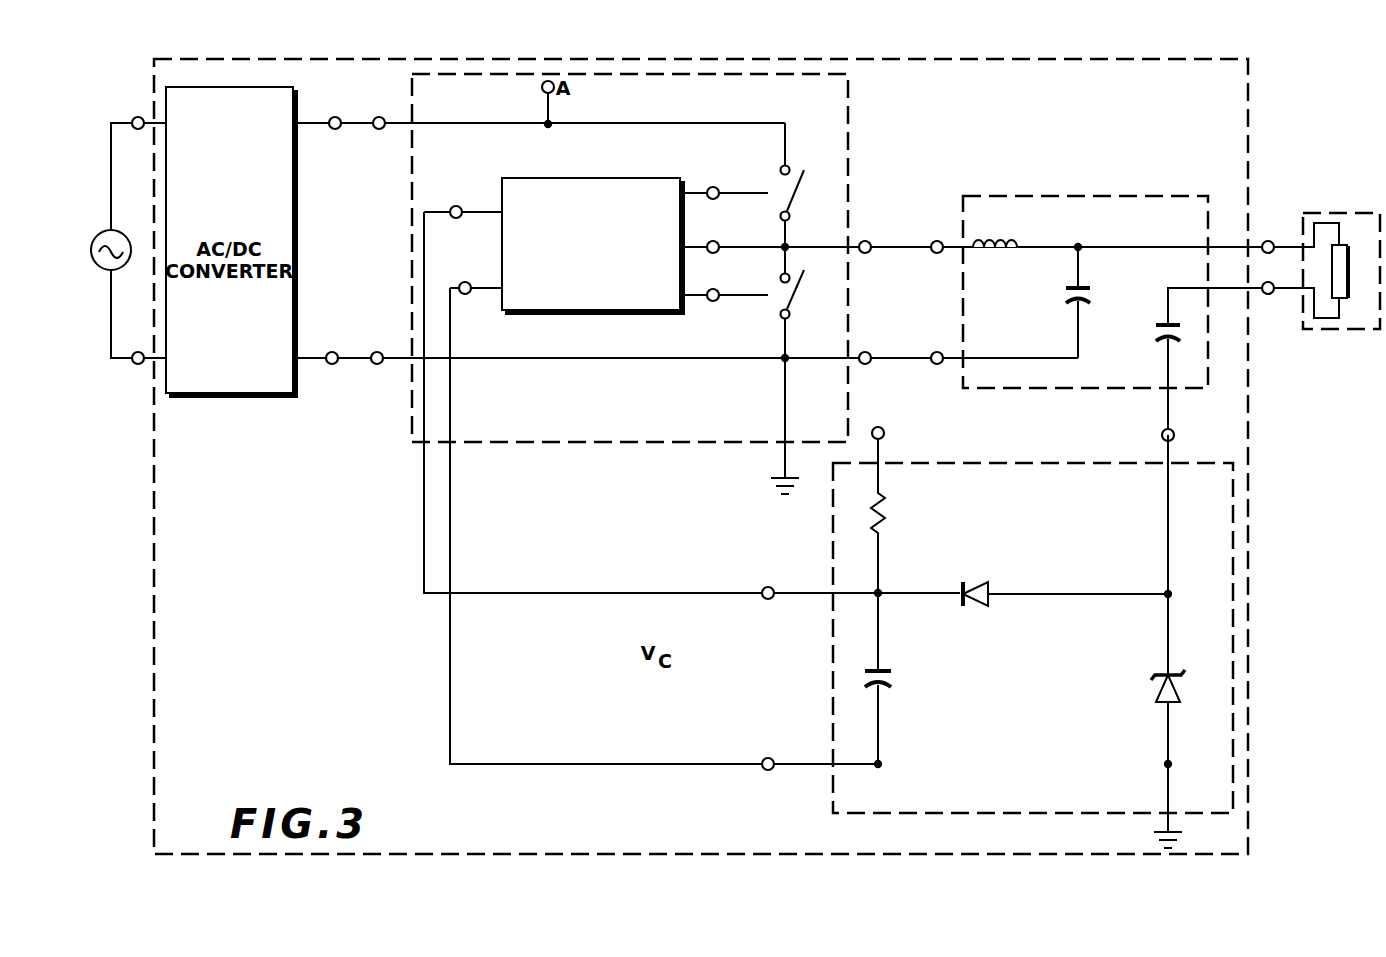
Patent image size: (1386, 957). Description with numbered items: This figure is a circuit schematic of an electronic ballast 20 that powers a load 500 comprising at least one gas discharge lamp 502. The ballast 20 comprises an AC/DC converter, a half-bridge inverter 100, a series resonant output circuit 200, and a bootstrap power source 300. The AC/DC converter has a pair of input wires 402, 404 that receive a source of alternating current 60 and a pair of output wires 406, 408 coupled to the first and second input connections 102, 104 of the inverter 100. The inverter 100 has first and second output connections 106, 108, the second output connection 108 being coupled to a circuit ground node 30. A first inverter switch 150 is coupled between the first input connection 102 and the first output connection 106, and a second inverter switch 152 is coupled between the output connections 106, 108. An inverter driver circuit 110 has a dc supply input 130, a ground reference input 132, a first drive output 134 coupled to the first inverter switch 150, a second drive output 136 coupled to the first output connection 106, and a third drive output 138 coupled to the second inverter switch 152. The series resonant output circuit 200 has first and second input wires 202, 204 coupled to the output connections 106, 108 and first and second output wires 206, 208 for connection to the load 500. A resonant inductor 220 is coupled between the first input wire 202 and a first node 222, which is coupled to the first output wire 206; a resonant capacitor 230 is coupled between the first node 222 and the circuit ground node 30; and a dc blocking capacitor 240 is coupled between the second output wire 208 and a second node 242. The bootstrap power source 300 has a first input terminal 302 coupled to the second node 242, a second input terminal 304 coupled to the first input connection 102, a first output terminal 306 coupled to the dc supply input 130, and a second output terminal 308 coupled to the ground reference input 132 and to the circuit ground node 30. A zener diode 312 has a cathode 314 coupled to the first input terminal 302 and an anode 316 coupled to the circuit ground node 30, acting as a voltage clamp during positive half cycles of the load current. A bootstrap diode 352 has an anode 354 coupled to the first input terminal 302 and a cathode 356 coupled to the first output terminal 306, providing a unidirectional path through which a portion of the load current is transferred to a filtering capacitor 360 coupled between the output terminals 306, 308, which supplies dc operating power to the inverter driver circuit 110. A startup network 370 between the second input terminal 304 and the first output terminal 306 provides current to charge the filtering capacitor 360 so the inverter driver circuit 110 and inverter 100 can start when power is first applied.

The electronic ballast 20 is at (153, 476).
The circuit ground node 30 is at (783, 470).
The source of alternating current 60 is at (102, 236).
The half-bridge inverter 100 is at (849, 95).
The first input connection 102 is at (377, 130).
The second input connection 104 is at (377, 365).
The first output connection 106 is at (868, 241).
The second output connection 108 is at (868, 352).
The inverter driver circuit 110 is at (573, 178).
The dc supply input 130 is at (452, 205).
The ground reference input 132 is at (462, 281).
The first drive output 134 is at (710, 186).
The second drive output 136 is at (713, 241).
The third drive output 138 is at (712, 289).
The first inverter switch 150 is at (804, 176).
The second inverter switch 152 is at (804, 276).
The series resonant output circuit 200 is at (1098, 197).
The first input wire 202 is at (937, 254).
The second input wire 204 is at (937, 365).
The first output wire 206 is at (1267, 241).
The second output wire 208 is at (1266, 295).
The resonant inductor 220 is at (1010, 238).
The first node 222 is at (1082, 246).
The resonant capacitor 230 is at (1068, 290).
The dc blocking capacitor 240 is at (1164, 318).
The second node 242 is at (1170, 412).
The bootstrap power source 300 is at (1030, 462).
The first input terminal 302 is at (1160, 436).
The second input terminal 304 is at (885, 432).
The first output terminal 306 is at (764, 588).
The second output terminal 308 is at (764, 759).
The zener diode 312 is at (1158, 697).
The cathode 314 is at (1165, 608).
The anode 316 is at (1165, 718).
The bootstrap diode 352 is at (985, 583).
The anode 354 is at (1088, 594).
The cathode 356 is at (915, 600).
The filtering capacitor 360 is at (886, 686).
The startup network 370 is at (886, 510).
The input wire 402 is at (137, 117).
The input wire 404 is at (134, 364).
The output wire 406 is at (337, 117).
The output wire 408 is at (334, 352).
The load 500 is at (1329, 302).
The gas discharge lamp 502 is at (1348, 260).